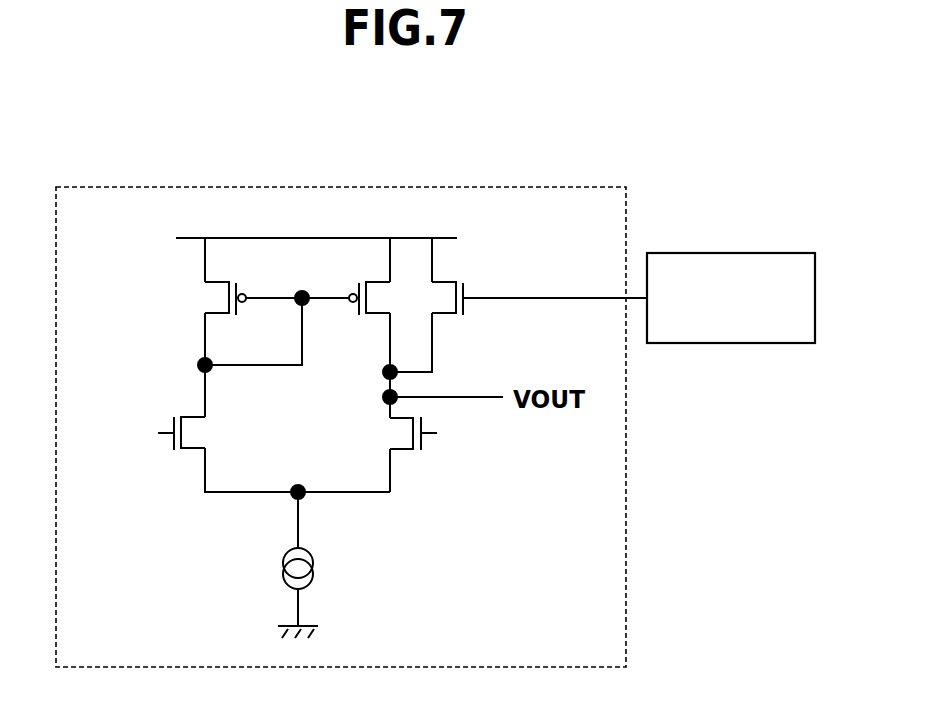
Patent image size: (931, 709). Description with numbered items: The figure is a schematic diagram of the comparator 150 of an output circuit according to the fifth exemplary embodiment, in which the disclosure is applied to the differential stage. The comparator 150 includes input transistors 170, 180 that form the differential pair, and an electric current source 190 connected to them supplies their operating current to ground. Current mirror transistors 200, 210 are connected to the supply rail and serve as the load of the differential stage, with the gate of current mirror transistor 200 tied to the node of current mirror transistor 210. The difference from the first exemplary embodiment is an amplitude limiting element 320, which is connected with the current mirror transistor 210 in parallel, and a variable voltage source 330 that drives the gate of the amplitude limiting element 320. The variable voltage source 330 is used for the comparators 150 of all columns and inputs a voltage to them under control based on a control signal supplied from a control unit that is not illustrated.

The comparator 150 is at (352, 187).
The input transistor 170 is at (177, 452).
The input transistor 180 is at (415, 452).
The electric current source 190 is at (282, 577).
The current mirror transistor 200 is at (205, 299).
The current mirror transistor 210 is at (360, 283).
The amplitude limiting element 320 is at (458, 317).
The variable voltage source 330 is at (731, 253).